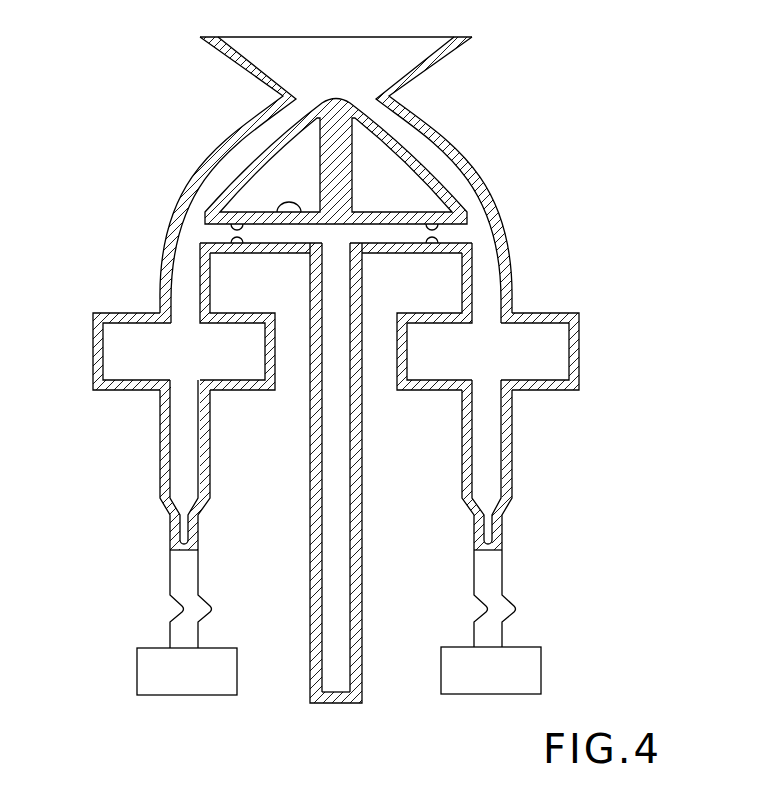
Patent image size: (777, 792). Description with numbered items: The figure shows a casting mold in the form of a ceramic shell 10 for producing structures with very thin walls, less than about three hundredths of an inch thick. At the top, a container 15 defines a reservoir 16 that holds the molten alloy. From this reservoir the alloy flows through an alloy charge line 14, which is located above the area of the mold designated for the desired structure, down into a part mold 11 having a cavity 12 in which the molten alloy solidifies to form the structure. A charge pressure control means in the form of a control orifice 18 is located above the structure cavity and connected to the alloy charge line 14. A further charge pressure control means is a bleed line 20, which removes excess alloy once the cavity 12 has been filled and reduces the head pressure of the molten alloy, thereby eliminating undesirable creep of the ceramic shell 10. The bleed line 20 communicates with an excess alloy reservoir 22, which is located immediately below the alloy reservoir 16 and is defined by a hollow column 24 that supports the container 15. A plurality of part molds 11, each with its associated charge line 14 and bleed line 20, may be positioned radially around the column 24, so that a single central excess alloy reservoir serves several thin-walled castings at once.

The ceramic shell 10 is at (431, 83).
The part mold 11 is at (162, 412).
The cavity 12 is at (176, 468).
The alloy charge line 14 is at (208, 148).
The container 15 is at (424, 60).
The reservoir 16 is at (312, 68).
The control orifice 18 is at (222, 230).
The bleed line 20 is at (284, 207).
The excess alloy reservoir 22 is at (328, 623).
The hollow column 24 is at (362, 495).